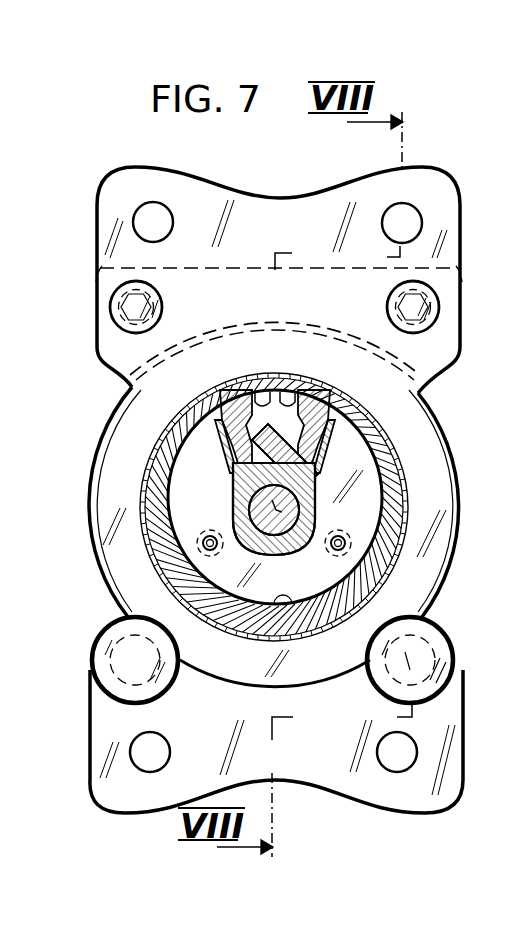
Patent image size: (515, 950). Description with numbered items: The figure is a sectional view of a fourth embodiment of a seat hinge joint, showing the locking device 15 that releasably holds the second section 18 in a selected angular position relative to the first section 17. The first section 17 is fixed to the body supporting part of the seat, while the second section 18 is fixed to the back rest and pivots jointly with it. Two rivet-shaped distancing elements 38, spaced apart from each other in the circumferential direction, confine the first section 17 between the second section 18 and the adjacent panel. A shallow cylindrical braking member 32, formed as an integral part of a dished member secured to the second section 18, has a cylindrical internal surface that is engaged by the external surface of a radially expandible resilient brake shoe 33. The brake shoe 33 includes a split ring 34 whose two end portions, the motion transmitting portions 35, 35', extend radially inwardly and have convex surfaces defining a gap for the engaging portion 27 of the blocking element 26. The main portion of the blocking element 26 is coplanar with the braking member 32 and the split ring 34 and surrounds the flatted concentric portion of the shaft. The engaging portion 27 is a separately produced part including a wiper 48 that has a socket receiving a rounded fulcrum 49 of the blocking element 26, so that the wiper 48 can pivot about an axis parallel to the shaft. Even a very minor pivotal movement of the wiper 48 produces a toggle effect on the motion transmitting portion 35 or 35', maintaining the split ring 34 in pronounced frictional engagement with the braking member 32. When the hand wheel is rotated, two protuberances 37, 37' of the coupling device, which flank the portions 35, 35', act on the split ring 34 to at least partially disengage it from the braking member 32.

The device 15 is at (382, 410).
The first section 17 is at (322, 759).
The second section 18 is at (271, 234).
The blocking element 26 is at (250, 548).
The engaging portion 27 is at (282, 392).
The braking member 32 is at (403, 507).
The brake shoe 33 is at (313, 613).
The split ring 34 is at (250, 615).
The motion transmitting portion 35 is at (324, 373).
The motion transmitting portion 35' is at (214, 373).
The protuberance 37 is at (411, 444).
The protuberance 37' is at (143, 441).
The distancing element 38 is at (130, 688).
The wiper 48 is at (288, 418).
The fulcrum 49 is at (245, 492).